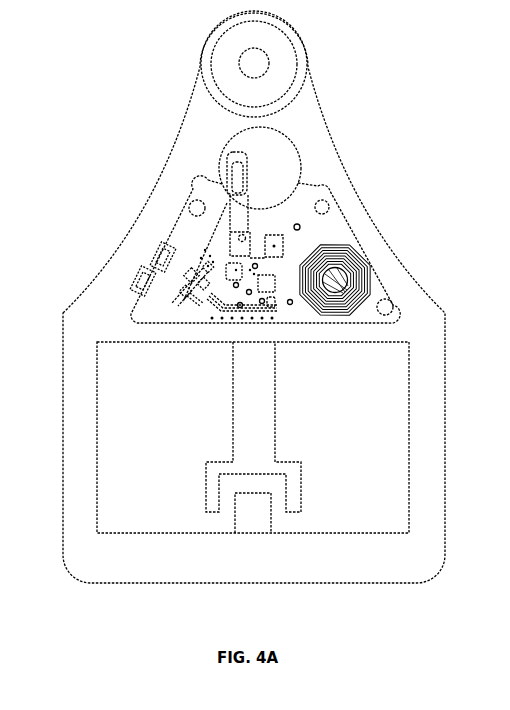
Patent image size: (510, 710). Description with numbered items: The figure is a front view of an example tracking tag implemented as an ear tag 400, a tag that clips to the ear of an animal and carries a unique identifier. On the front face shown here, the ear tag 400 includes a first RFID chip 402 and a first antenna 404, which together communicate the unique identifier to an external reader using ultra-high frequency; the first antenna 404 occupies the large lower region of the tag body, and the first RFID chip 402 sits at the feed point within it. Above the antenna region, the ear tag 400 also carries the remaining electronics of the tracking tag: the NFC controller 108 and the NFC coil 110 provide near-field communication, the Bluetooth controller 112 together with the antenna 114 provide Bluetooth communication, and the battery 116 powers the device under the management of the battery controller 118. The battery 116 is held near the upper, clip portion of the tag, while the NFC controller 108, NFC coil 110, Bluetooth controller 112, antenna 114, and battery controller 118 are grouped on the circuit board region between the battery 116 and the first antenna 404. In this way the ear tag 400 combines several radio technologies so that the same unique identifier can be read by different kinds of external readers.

The ear tag 400 is at (123, 70).
The battery 116 is at (293, 145).
The NFC controller 108 is at (276, 278).
The NFC coil 110 is at (376, 281).
The battery controller 118 is at (221, 263).
The antenna 114 is at (157, 281).
The Bluetooth controller 112 is at (190, 298).
The first antenna 404 is at (127, 430).
The first RFID chip 402 is at (236, 511).